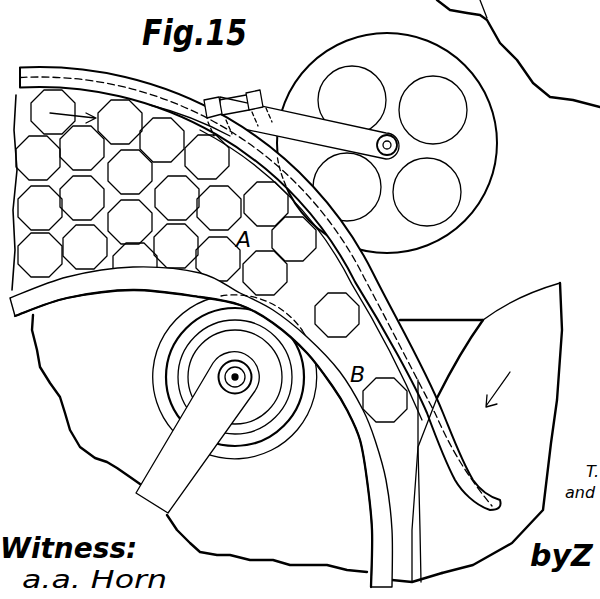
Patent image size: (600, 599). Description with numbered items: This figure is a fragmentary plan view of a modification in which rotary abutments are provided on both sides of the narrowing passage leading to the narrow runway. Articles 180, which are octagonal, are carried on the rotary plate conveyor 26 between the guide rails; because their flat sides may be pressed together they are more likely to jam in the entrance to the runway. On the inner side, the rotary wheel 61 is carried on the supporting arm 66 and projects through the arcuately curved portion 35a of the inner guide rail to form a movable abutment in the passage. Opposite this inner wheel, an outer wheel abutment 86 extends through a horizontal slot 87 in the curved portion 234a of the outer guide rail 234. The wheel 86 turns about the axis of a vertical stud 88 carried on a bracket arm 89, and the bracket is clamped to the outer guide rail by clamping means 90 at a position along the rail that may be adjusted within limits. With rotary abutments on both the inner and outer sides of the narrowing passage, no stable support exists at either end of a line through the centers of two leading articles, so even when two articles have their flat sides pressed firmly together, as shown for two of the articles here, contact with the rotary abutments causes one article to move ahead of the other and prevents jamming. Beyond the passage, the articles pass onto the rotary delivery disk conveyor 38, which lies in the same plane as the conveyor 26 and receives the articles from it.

The outer guide rail 234 is at (67, 67).
The curved portion of outer guide rail 234a is at (203, 96).
The articles 180 is at (72, 103).
The clamping means 90 is at (245, 96).
The bracket arm 89 is at (307, 128).
The vertical stud 88 is at (393, 142).
The outer wheel abutment 86 is at (490, 183).
The supporting arm 66 is at (183, 463).
The rotary plate conveyor 26 is at (366, 283).
The horizontal slot 87 is at (390, 298).
The arcuately curved portion of inner guide rail 35a is at (157, 289).
The rotary wheel 61 is at (273, 423).
The rotary delivery disk conveyor 38 is at (548, 341).